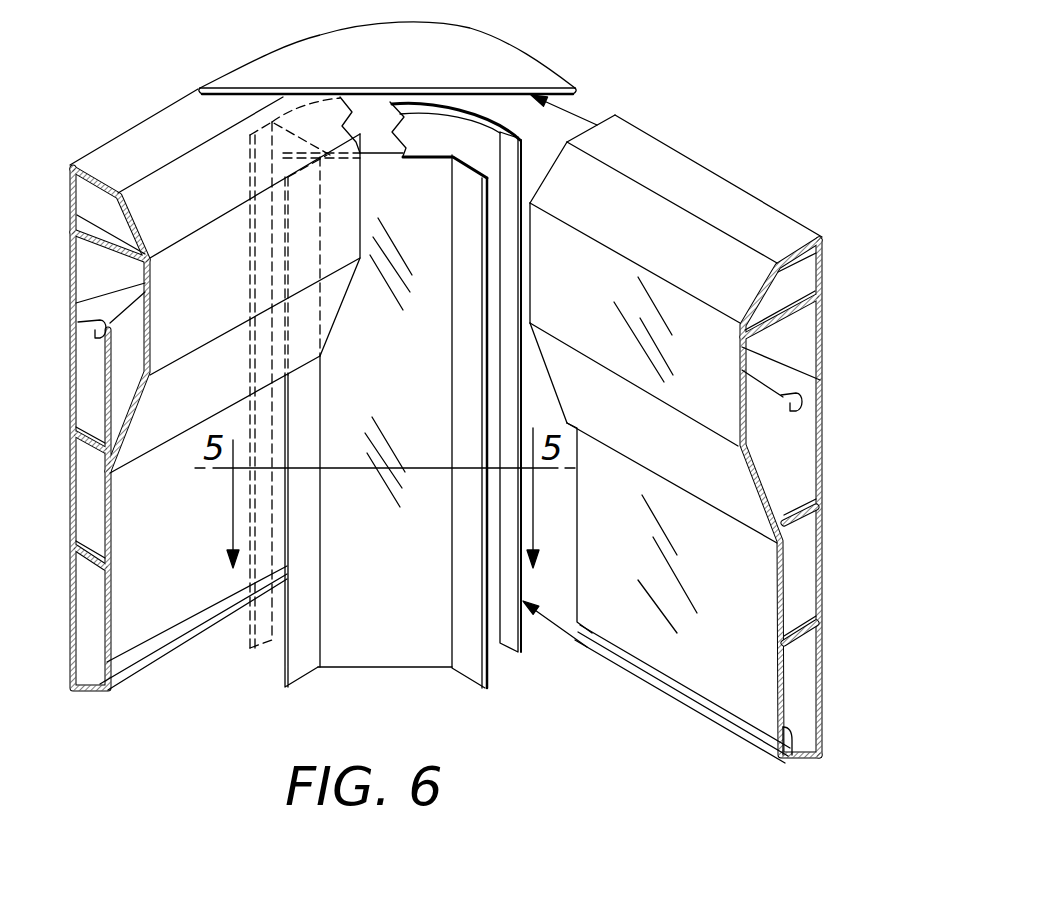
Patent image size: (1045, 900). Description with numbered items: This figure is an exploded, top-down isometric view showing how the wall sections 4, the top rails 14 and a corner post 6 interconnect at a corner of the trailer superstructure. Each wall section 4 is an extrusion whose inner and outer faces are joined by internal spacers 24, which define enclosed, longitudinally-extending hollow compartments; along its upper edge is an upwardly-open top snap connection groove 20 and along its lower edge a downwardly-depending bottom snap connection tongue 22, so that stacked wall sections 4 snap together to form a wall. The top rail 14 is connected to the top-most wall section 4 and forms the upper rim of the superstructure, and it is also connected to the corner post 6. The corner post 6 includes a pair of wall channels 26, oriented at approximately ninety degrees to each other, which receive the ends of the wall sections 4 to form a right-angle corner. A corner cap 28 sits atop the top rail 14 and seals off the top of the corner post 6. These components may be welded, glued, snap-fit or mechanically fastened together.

The wall section 4 is at (742, 647).
The corner post 6 is at (400, 604).
The top rail 14 is at (822, 238).
The top snap connection groove 20 is at (818, 402).
The bottom snap connection tongue 22 is at (813, 752).
The internal spacer 24 is at (815, 630).
The wall channel 26 is at (490, 647).
The corner cap 28 is at (407, 70).